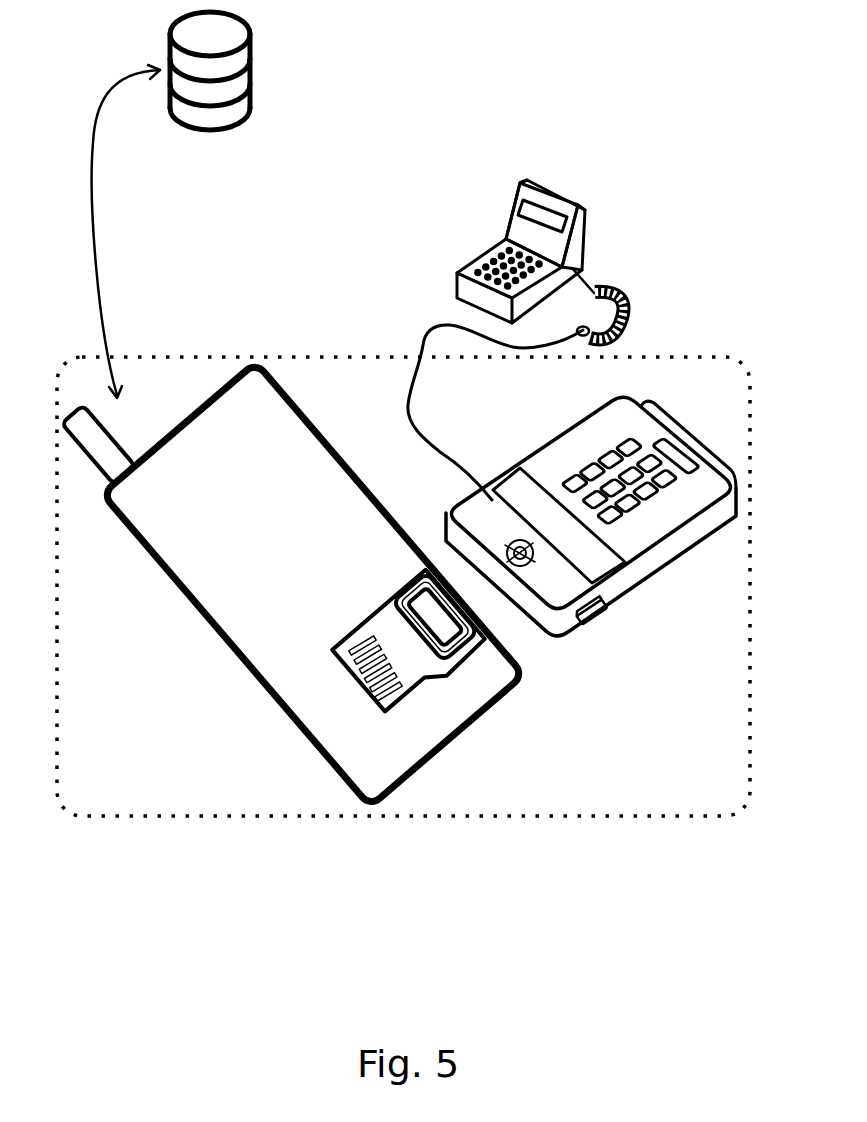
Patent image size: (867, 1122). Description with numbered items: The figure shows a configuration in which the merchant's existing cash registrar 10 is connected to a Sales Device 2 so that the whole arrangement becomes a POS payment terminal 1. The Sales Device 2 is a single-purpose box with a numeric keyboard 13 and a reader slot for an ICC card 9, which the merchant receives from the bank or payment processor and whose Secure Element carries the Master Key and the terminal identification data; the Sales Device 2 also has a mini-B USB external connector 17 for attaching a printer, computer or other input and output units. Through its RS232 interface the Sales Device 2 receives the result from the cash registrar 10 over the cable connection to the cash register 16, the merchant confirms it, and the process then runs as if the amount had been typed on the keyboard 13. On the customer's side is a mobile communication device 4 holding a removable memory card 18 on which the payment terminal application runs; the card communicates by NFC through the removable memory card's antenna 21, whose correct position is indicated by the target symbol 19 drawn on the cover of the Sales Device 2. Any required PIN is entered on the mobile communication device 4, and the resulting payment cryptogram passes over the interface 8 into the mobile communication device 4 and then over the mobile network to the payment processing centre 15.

The POS payment terminal 1 is at (152, 357).
The Sales Device 2 is at (544, 592).
The mobile communication device 4 is at (330, 654).
The interface 8 is at (370, 680).
The ICC card 9 is at (687, 420).
The cash registrar 10 is at (527, 233).
The keyboard 13 is at (650, 493).
The payment processing centre 15 is at (208, 97).
The connection to the cash register 16 is at (420, 347).
The external connector 17 is at (595, 622).
The removable memory card 18 is at (412, 660).
The target symbol 19 is at (508, 543).
The removable memory card's antenna 21 is at (439, 630).